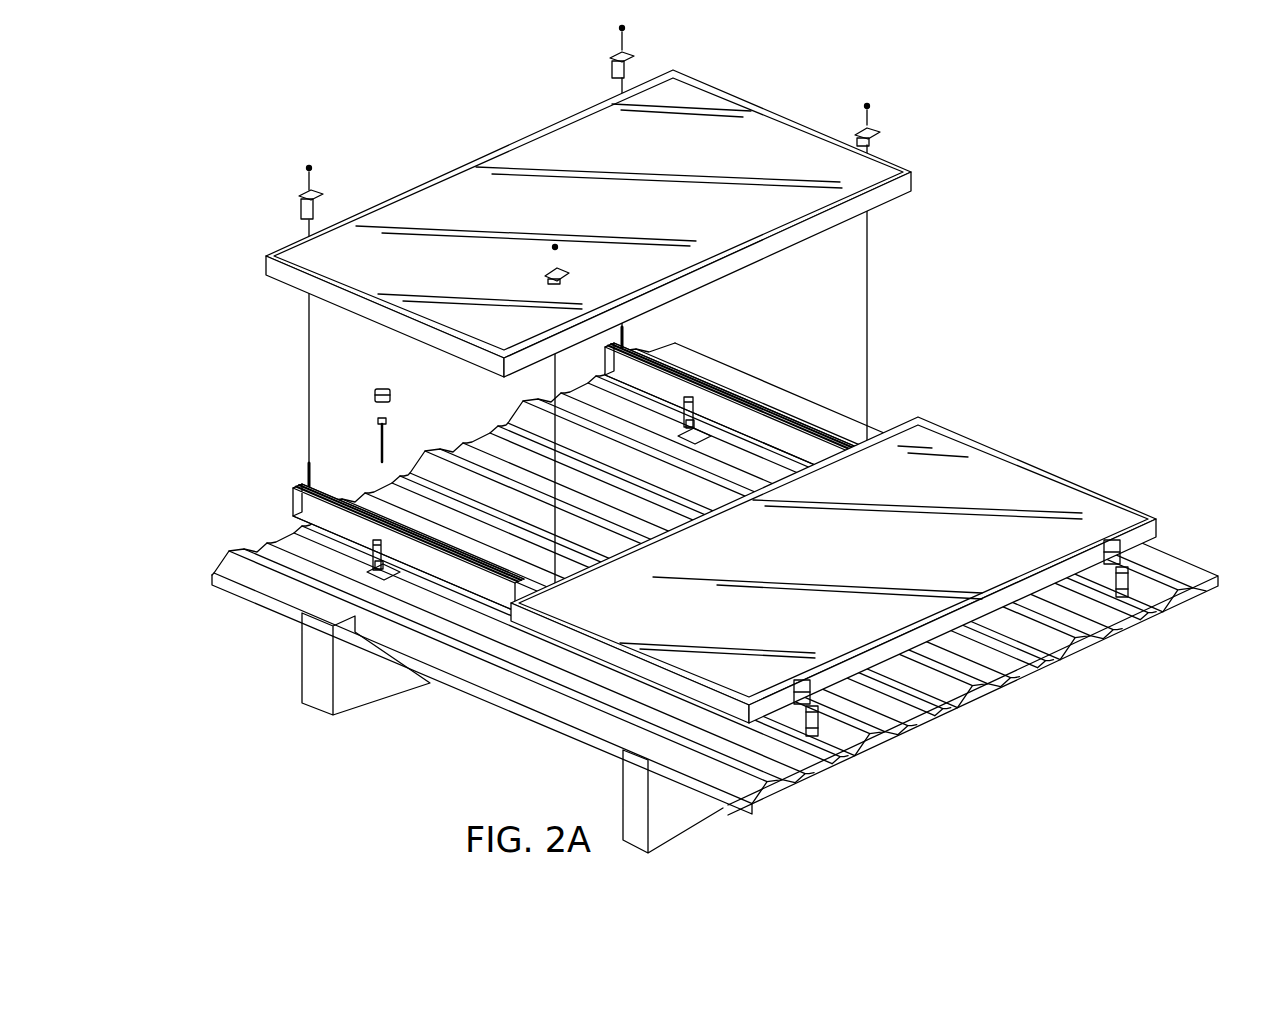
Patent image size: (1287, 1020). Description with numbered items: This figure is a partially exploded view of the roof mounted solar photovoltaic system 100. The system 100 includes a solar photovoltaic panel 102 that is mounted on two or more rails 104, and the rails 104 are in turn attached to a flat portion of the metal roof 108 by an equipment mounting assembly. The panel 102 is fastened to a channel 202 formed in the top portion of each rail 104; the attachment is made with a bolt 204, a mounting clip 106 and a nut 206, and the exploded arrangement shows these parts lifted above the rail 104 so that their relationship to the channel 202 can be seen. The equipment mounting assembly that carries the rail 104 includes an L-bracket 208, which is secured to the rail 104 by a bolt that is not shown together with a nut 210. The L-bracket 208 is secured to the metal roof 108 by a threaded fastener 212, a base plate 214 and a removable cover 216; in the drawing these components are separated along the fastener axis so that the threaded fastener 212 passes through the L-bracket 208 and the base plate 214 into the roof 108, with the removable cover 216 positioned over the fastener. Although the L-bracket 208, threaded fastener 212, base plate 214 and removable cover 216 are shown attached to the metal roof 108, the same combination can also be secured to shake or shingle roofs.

The roof mounted solar photovoltaic system 100 is at (944, 328).
The solar photovoltaic panel 102 is at (631, 214).
The rail 104 is at (838, 717).
The mounting clip 106 is at (632, 55).
The metal roof 108 is at (507, 687).
The channel 202 is at (750, 400).
The bolt 204 is at (624, 330).
The nut 206 is at (616, 31).
The L-bracket 208 is at (365, 558).
The nut 210 is at (372, 517).
The threaded fastener 212 is at (385, 437).
The base plate 214 is at (372, 612).
The removable cover 216 is at (382, 386).